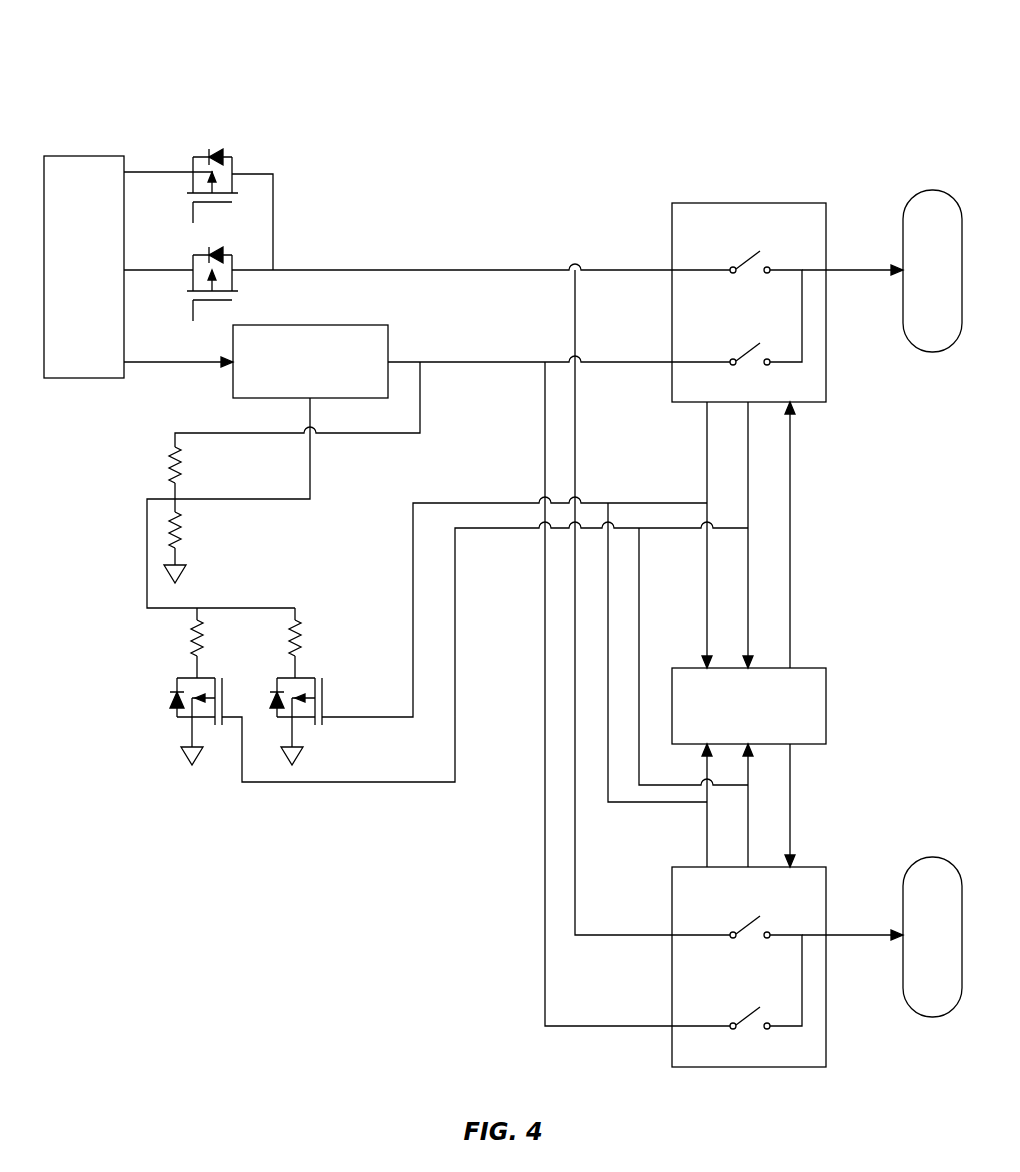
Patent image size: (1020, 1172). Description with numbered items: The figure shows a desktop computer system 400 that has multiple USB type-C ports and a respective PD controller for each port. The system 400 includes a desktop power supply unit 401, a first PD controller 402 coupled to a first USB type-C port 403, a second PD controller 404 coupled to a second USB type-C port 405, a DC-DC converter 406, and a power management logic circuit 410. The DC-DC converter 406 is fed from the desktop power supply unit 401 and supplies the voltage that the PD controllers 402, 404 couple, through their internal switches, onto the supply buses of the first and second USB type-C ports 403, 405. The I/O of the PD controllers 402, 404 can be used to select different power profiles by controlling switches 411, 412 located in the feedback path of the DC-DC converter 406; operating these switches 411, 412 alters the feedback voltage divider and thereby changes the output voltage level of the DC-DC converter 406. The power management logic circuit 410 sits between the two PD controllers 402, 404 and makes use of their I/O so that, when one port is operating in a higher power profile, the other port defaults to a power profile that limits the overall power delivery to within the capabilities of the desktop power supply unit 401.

The desktop computer system 400 is at (817, 56).
The desktop power supply unit 401 is at (84, 155).
The first PD controller 402 is at (751, 202).
The first USB type-C port 403 is at (934, 190).
The second PD controller 404 is at (828, 887).
The second USB type-C port 405 is at (934, 855).
The DC-DC converter 406 is at (313, 325).
The power management logic circuit 410 is at (828, 687).
The switch 411 is at (177, 680).
The switch 412 is at (306, 677).